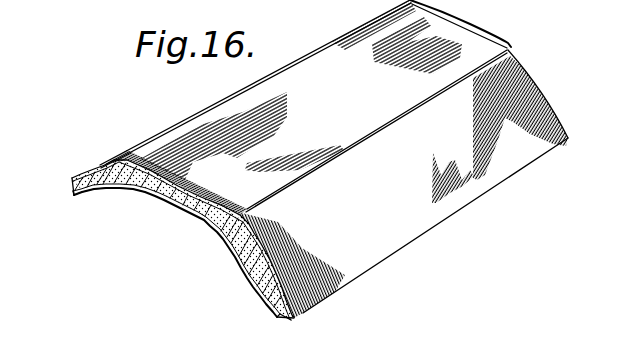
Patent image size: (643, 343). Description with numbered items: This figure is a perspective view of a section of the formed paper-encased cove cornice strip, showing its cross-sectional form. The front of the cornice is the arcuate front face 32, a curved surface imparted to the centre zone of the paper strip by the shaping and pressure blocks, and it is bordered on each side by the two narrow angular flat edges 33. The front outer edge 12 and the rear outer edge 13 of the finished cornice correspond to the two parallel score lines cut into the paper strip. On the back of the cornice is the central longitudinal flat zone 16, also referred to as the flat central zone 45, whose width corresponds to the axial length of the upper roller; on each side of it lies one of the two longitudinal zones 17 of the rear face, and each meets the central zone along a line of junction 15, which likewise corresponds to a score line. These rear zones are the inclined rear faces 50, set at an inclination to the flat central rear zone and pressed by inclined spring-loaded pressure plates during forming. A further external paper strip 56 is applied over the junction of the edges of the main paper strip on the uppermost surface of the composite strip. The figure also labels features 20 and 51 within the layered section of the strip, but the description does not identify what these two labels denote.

The front outer edge 12 is at (77, 196).
The rear outer edge 13 is at (72, 179).
The line of junction 15 is at (188, 118).
The central longitudinal flat zone 16 is at (167, 196).
The longitudinal zones of the rear face 17 is at (103, 168).
The bottom end 20 is at (281, 319).
The arcuate front face 32 is at (215, 231).
The narrow angular flat edges 33 is at (74, 192).
The flat central zone 45 is at (460, 24).
The inclined rear faces 50 is at (104, 164).
The intermediate layer 51 is at (195, 203).
The further external paper strip 56 is at (343, 43).